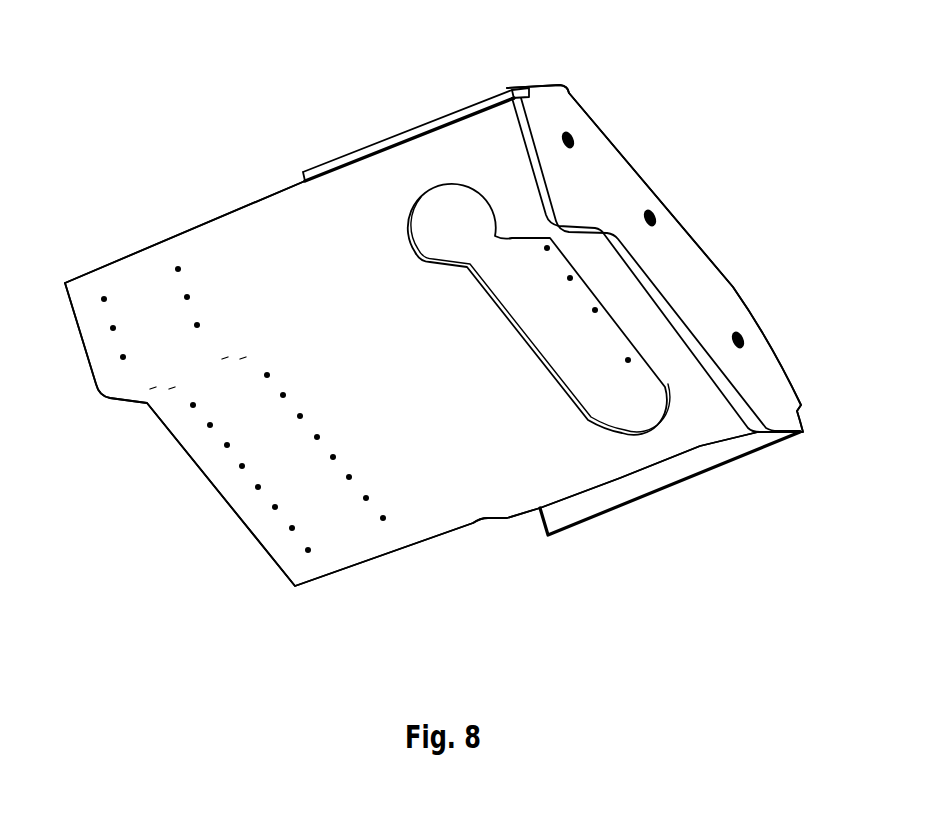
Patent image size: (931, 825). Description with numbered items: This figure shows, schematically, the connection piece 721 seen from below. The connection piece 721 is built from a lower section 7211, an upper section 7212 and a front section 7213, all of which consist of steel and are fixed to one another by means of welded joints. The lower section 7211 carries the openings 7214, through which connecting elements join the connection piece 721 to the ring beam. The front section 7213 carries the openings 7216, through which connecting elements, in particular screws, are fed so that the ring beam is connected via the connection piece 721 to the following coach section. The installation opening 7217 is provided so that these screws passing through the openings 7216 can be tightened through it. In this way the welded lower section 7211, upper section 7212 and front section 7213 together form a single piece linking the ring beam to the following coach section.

The connection piece 721 is at (240, 177).
The lower section 7211 is at (453, 485).
The upper section 7212 is at (412, 125).
The front section 7213 is at (618, 178).
The openings 7214 is at (382, 523).
The openings 7216 is at (660, 217).
The installation opening 7217 is at (610, 402).